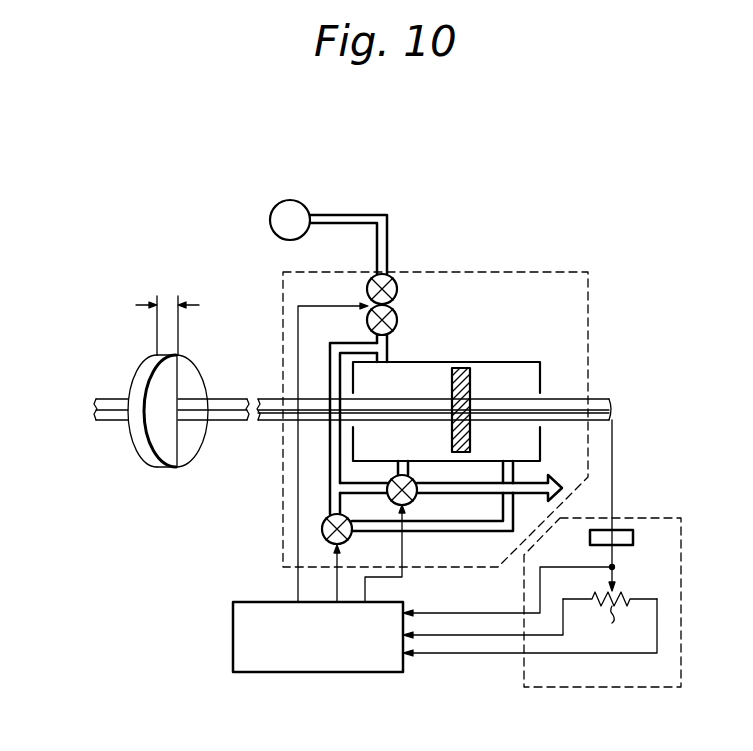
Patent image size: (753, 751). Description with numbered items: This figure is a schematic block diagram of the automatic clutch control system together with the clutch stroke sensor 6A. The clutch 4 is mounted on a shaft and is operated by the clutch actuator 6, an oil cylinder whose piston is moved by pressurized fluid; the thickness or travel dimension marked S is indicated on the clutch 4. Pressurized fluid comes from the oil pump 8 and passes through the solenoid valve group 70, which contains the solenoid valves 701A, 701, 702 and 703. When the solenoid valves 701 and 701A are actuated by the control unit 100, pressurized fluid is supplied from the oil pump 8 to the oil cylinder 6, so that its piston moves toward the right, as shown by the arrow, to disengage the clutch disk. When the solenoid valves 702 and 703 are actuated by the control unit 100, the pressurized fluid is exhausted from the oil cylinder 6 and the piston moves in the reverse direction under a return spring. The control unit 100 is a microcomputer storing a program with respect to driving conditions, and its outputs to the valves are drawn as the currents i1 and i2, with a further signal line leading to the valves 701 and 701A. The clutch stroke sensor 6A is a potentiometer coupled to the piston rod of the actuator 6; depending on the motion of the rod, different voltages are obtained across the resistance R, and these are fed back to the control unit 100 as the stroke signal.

The clutch 4 is at (168, 468).
The disc thickness dimension S is at (167, 324).
The oil pump 8 is at (270, 221).
The solenoid valve 701A is at (398, 292).
The solenoid valve 701 is at (398, 323).
The solenoid valve 702 is at (348, 541).
The solenoid valve 703 is at (414, 502).
The clutch actuator 6 is at (455, 362).
The solenoid valve group 70 is at (588, 318).
The clutch stroke sensor 6A is at (542, 553).
The resistance R is at (610, 619).
The control current to valve 702 i1 is at (335, 584).
The control current to valve 703 i2 is at (405, 550).
The control unit 100 is at (232, 648).